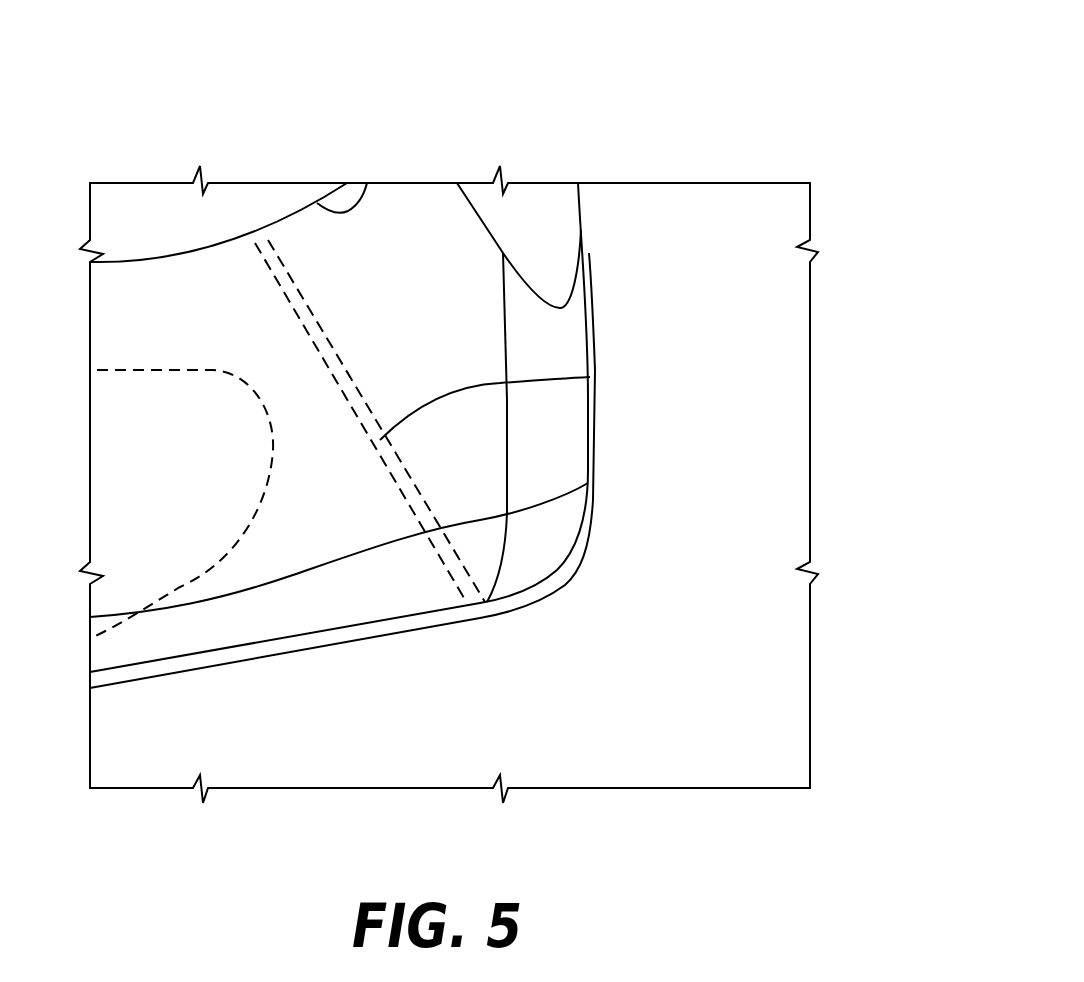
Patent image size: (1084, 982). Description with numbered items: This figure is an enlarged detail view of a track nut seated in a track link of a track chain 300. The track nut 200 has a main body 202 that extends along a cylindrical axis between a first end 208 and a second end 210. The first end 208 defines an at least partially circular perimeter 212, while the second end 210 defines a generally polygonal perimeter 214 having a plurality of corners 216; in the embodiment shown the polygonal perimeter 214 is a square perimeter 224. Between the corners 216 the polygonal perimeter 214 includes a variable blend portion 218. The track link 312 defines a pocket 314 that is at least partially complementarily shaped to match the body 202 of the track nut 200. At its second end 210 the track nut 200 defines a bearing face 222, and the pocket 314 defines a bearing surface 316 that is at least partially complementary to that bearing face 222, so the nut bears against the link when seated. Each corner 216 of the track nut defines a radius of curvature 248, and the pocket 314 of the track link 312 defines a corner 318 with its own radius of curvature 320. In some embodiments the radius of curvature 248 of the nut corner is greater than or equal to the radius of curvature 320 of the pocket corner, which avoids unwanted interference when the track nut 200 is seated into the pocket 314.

The track nut 200 is at (490, 340).
The main body 202 is at (400, 257).
The first end 208 is at (220, 247).
The second end 210 is at (205, 657).
The at least partially circular perimeter 212 is at (367, 183).
The polygonal perimeter 214 is at (556, 390).
The corners 216 is at (558, 470).
The variable blend portion 218 is at (345, 592).
The bearing face 222 is at (370, 507).
The square perimeter 224 is at (590, 377).
The radius of curvature 248 is at (545, 552).
The track chain 300 is at (627, 126).
The track link 312 is at (710, 252).
The pocket 314 is at (530, 604).
The bearing surface 316 is at (337, 503).
The corner 318 is at (632, 633).
The radius of curvature 320 is at (550, 595).